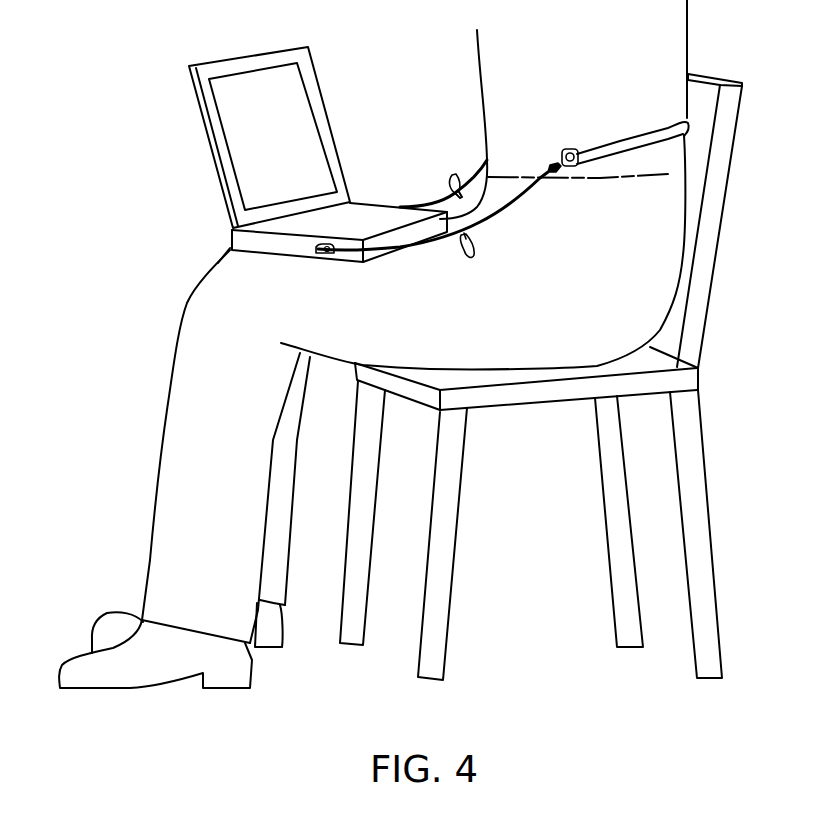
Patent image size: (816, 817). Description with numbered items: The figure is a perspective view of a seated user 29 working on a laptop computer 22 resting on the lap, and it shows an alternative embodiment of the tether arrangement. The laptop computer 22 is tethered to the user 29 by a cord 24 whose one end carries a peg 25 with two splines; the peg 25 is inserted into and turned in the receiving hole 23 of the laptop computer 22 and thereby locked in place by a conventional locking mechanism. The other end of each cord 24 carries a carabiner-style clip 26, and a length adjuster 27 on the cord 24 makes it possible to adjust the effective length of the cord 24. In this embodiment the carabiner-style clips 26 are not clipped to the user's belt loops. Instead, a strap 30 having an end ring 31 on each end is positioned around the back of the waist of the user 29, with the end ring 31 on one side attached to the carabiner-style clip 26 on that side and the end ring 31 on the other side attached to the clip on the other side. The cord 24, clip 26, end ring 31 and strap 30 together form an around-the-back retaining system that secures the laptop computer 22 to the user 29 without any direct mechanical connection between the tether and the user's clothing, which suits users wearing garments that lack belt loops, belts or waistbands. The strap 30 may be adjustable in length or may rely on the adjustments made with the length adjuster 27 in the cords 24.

The laptop computer 22 is at (230, 127).
The receiving hole 23 is at (350, 207).
The cord 24 is at (472, 175).
The peg 25 is at (333, 257).
The carabiner-style clip 26 is at (556, 162).
The length adjuster 27 is at (449, 181).
The user 29 is at (490, 50).
The strap 30 is at (642, 133).
The end ring 31 is at (573, 147).